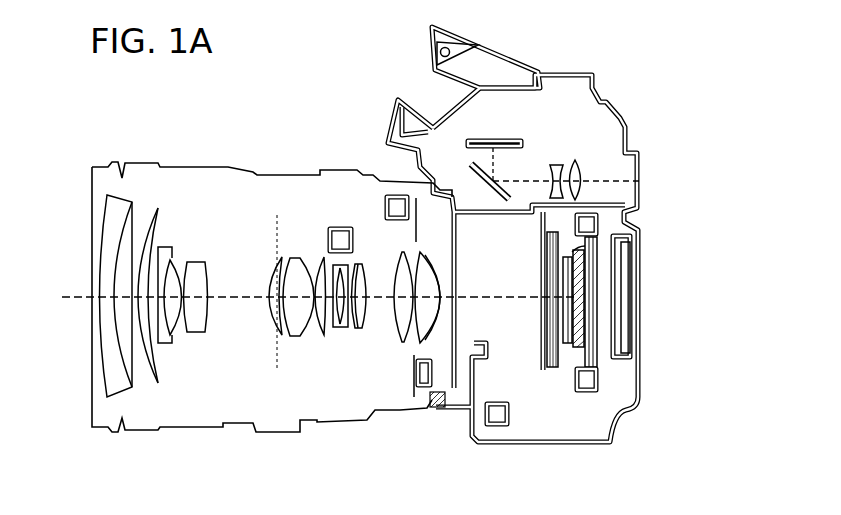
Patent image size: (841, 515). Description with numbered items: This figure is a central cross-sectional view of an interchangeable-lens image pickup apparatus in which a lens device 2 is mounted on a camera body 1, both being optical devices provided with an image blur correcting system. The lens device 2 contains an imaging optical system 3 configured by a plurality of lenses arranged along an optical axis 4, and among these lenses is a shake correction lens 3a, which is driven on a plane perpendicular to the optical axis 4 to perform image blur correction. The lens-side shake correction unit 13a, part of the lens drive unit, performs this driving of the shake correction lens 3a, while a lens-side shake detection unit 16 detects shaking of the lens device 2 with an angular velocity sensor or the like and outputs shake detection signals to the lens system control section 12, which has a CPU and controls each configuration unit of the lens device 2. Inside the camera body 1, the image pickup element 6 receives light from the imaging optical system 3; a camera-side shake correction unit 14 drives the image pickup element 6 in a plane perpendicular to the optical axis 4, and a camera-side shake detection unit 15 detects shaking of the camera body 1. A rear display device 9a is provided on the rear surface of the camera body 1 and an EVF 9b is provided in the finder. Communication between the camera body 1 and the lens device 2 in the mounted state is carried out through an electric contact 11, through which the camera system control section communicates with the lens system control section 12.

The camera body 1 is at (610, 97).
The lens device 2 is at (212, 170).
The imaging optical system 3 is at (238, 400).
The shake correction lens 3a is at (339, 331).
The optical axis 4 is at (66, 302).
The image pickup element 6 is at (585, 318).
The rear display device 9a is at (628, 328).
The EVF (electronic viewfinder) 9b is at (590, 171).
The electric contact 11 is at (447, 410).
The lens system control section 12 is at (414, 367).
The lens-side shake correction unit 13a is at (338, 226).
The camera-side shake correction unit 14 is at (585, 392).
The camera-side shake detection unit 15 is at (498, 420).
The lens-side shake detection unit 16 is at (393, 197).